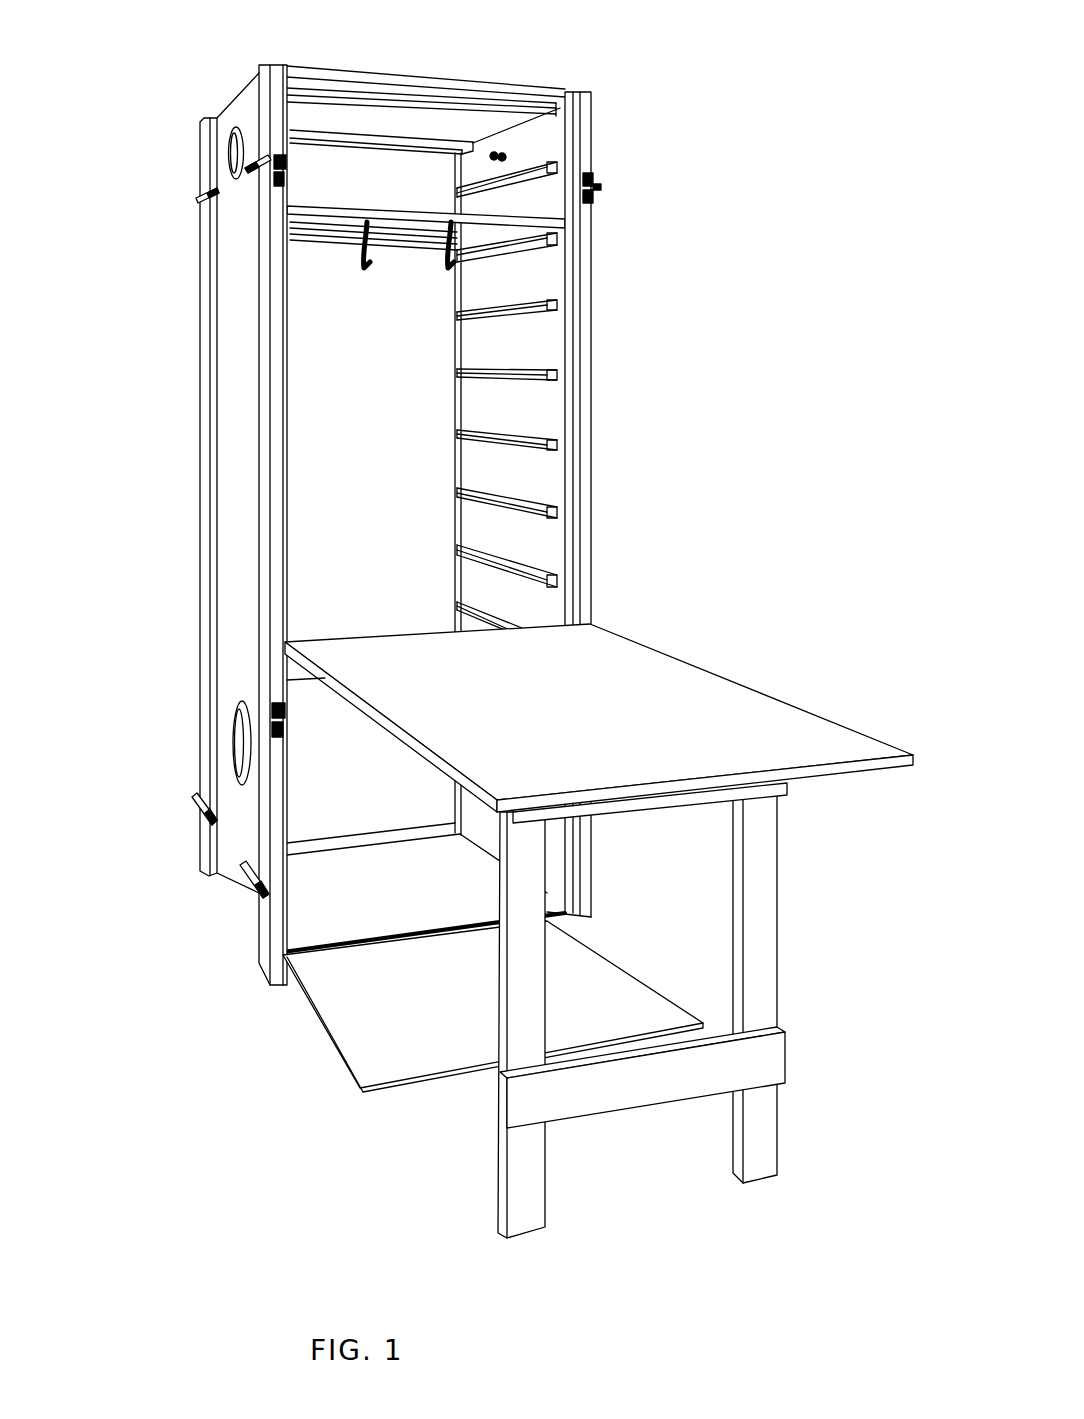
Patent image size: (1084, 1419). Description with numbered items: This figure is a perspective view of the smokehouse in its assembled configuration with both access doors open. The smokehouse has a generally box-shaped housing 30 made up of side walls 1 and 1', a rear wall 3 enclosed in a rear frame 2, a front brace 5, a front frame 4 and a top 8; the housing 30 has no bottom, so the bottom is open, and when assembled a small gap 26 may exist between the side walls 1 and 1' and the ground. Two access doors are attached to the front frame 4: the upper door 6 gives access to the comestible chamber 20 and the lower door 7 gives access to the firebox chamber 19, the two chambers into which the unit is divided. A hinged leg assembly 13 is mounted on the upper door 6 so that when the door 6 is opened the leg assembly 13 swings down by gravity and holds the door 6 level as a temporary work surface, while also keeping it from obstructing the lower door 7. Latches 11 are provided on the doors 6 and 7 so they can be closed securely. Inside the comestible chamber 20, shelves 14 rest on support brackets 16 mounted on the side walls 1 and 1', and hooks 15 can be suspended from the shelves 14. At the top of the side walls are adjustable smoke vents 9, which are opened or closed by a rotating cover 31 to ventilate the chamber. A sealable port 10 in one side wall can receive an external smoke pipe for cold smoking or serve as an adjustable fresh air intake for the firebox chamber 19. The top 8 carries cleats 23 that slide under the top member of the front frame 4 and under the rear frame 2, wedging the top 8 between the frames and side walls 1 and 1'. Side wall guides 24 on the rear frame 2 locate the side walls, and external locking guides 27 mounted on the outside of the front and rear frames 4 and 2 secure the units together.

The side wall 1 is at (199, 228).
The side wall 1' is at (558, 472).
The rear frame 2 is at (178, 497).
The rear wall 3 is at (341, 365).
The front frame 4 is at (600, 504).
The front brace 5 is at (231, 645).
The upper door 6 is at (599, 718).
The lower door 7 is at (473, 1006).
The top 8 is at (423, 97).
The smoke vent 9 is at (453, 174).
The sealable port 10 is at (188, 741).
The latch 11 is at (414, 458).
The hinged leg assembly 13 is at (686, 1010).
The shelf 14 is at (479, 235).
The hook 15 is at (408, 267).
The support bracket 16 is at (565, 562).
The firebox chamber 19 is at (315, 912).
The comestible chamber 20 is at (215, 509).
The cleat 23 is at (454, 78).
The side wall guide 24 is at (512, 407).
The gap 26 is at (341, 868).
The external locking guide 27 is at (193, 510).
The housing 30 is at (280, 35).
The rotating cover 31 is at (183, 149).